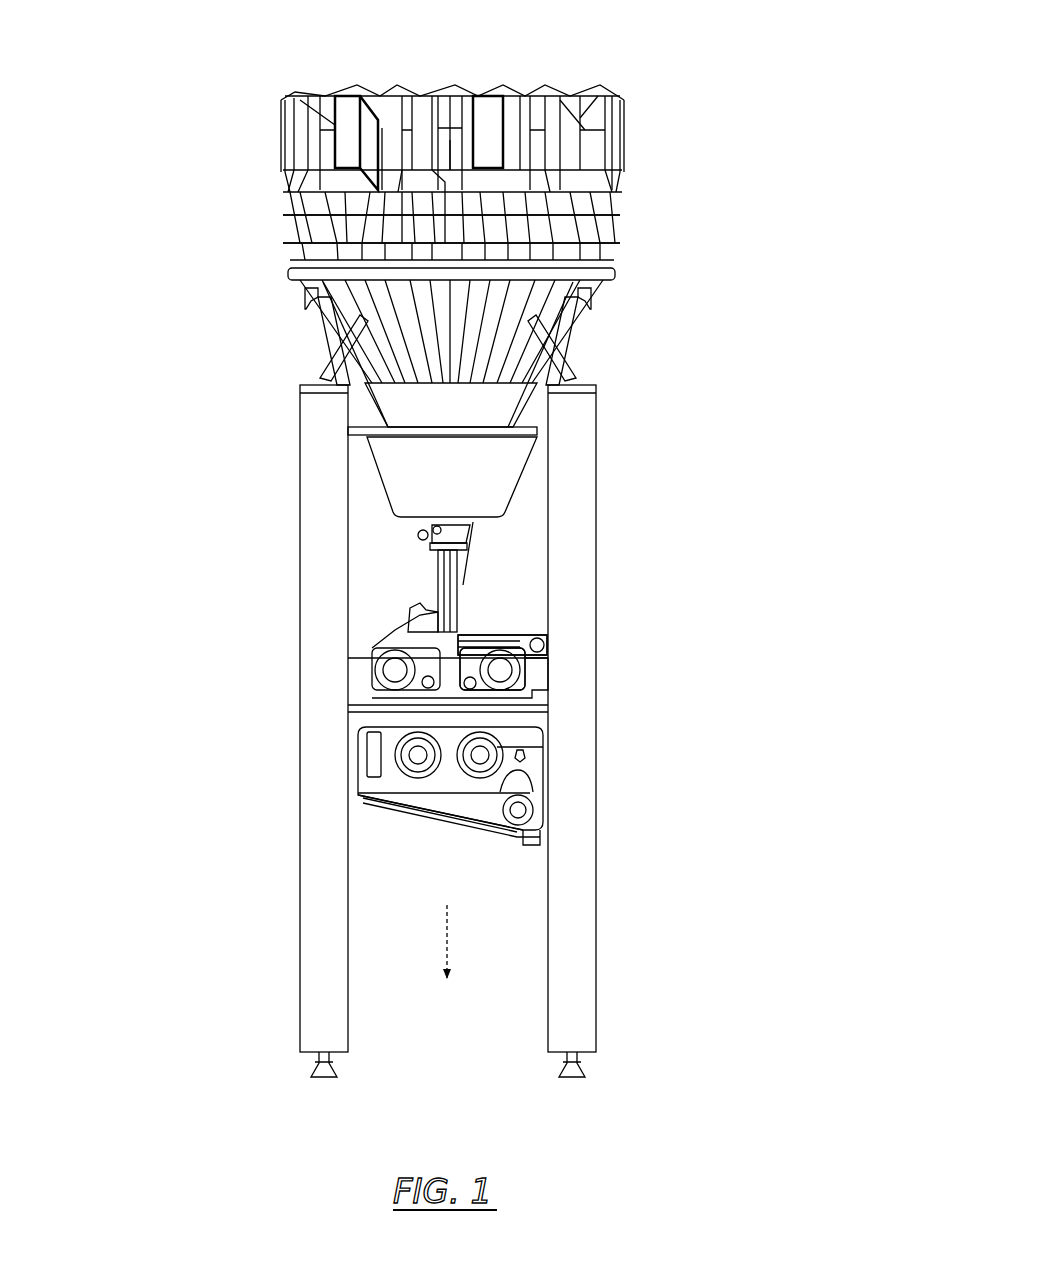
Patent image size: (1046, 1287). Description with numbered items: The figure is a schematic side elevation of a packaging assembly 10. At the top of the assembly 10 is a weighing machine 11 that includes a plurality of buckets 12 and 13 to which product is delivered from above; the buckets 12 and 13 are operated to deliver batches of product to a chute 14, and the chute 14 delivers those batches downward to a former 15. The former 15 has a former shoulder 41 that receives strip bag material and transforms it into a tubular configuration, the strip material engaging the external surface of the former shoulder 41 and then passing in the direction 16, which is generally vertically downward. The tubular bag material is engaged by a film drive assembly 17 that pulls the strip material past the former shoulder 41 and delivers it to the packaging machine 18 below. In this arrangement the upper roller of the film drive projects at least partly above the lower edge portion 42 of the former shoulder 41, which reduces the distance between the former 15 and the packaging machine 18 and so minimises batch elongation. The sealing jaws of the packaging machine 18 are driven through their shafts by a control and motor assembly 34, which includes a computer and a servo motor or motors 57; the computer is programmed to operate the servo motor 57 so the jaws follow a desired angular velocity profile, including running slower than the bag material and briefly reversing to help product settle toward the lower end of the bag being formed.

The packaging assembly 10 is at (238, 566).
The weighing machine 11 is at (240, 243).
The buckets 12 is at (560, 157).
The buckets 13 is at (525, 220).
The chute 14 is at (296, 381).
The former 15 is at (398, 541).
The direction 16 is at (453, 943).
The film drive assembly 17 is at (332, 662).
The packaging machine 18 is at (374, 833).
The control and motor assembly 34 is at (448, 827).
The former shoulder 41 is at (462, 617).
The lower edge portion 42 is at (488, 632).
The servo motor 57 is at (366, 763).